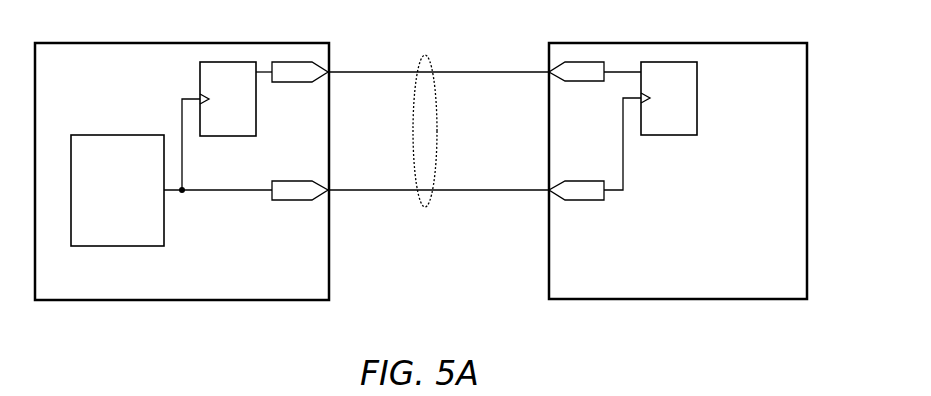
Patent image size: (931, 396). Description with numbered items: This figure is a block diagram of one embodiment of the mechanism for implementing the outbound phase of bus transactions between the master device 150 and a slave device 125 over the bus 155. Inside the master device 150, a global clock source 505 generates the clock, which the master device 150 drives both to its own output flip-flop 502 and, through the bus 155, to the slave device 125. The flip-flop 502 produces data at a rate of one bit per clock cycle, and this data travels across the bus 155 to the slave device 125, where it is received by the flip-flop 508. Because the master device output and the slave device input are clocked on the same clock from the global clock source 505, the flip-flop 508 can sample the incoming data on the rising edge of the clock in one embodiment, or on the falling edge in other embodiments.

The master device 150 is at (255, 300).
The global clock source 505 is at (120, 135).
The flip-flop 502 is at (220, 62).
The bus 155 is at (426, 205).
The slave device 125 is at (730, 299).
The flip-flop 508 is at (697, 104).